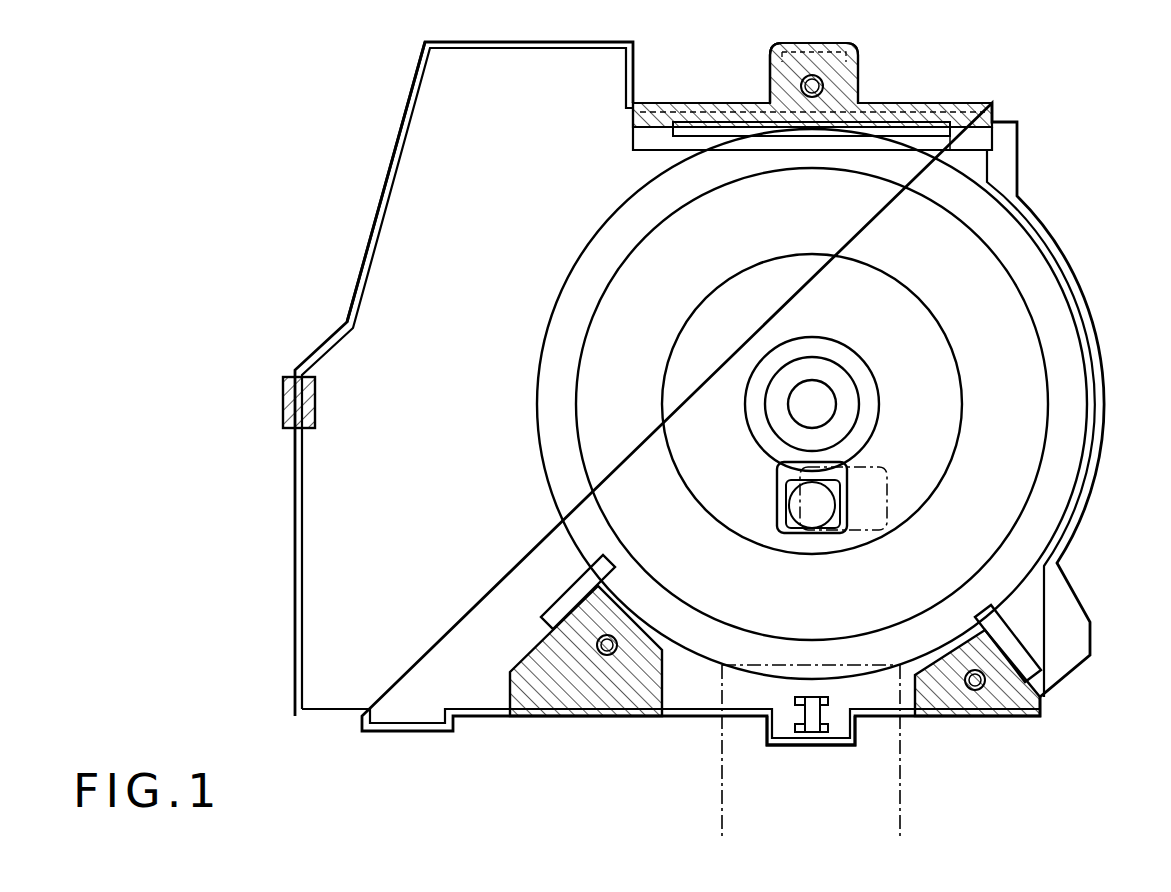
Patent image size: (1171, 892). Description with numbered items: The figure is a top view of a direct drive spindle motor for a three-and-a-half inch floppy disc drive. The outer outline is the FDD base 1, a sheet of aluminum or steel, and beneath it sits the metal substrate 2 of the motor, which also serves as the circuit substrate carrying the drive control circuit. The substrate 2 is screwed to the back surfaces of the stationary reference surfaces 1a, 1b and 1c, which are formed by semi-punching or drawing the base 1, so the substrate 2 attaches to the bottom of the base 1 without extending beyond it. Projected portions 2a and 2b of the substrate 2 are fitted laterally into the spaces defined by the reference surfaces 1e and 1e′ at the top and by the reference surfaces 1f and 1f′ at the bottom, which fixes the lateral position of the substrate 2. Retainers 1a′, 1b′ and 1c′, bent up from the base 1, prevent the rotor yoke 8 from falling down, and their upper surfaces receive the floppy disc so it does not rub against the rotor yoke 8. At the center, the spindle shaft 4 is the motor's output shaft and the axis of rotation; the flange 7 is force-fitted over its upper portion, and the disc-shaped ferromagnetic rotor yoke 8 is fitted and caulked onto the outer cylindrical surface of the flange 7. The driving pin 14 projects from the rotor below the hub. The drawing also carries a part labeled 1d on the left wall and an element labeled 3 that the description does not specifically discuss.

The FDD base 1 is at (699, 393).
The metal substrate 2 is at (407, 228).
The stationary reference surface 1a is at (856, 79).
The retainer 1a′ is at (978, 143).
The reference surface 1e is at (822, 55).
The reference surface 1e′ is at (773, 85).
The projected portion 2a is at (817, 62).
The rotor yoke 8 is at (935, 353).
The flange 7 is at (845, 392).
The spindle shaft 4 is at (805, 398).
The driving pin 14 is at (830, 502).
The left mounting block 1d is at (296, 380).
The stationary reference surface 1b is at (586, 655).
The retainer 1b′ is at (568, 600).
The stationary reference surface 1c is at (1020, 669).
The retainer 1c′ is at (1010, 640).
The reference surface 1f is at (853, 736).
The reference surface 1f′ is at (768, 730).
The projected portion 2b is at (811, 746).
The center lines 3 is at (722, 792).